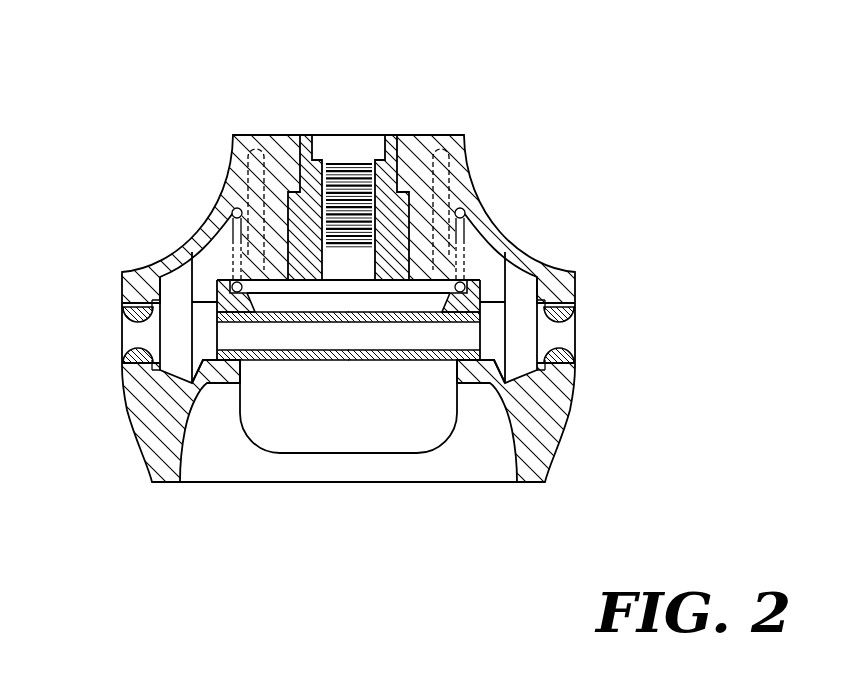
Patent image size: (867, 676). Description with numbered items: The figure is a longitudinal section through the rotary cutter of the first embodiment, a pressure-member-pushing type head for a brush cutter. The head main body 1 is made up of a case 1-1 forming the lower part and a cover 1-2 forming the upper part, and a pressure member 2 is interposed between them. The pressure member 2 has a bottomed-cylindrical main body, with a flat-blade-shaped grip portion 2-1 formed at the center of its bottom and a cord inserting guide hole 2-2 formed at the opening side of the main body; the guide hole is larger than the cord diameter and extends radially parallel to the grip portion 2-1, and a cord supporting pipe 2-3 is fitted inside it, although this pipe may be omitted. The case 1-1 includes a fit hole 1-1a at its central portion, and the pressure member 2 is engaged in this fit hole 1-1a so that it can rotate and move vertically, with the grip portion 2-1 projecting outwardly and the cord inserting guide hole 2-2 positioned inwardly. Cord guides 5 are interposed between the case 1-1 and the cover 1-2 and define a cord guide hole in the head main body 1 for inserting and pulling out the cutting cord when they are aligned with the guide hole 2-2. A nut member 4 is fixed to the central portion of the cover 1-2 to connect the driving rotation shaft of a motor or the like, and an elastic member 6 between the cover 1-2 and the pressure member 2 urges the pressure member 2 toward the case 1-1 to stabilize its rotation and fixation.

The head main body 1 is at (182, 212).
The case 1-1 is at (548, 435).
The fit hole 1-1a is at (244, 368).
The cover 1-2 is at (482, 215).
The pressure member 2 is at (433, 344).
The flat-blade-shaped grip portion 2-1 is at (293, 444).
The cord inserting guide hole 2-2 is at (475, 303).
The cord supporting pipe 2-3 is at (383, 357).
The nut member 4 is at (390, 168).
The cord guides 5 is at (122, 325).
The elastic member 6 is at (485, 253).